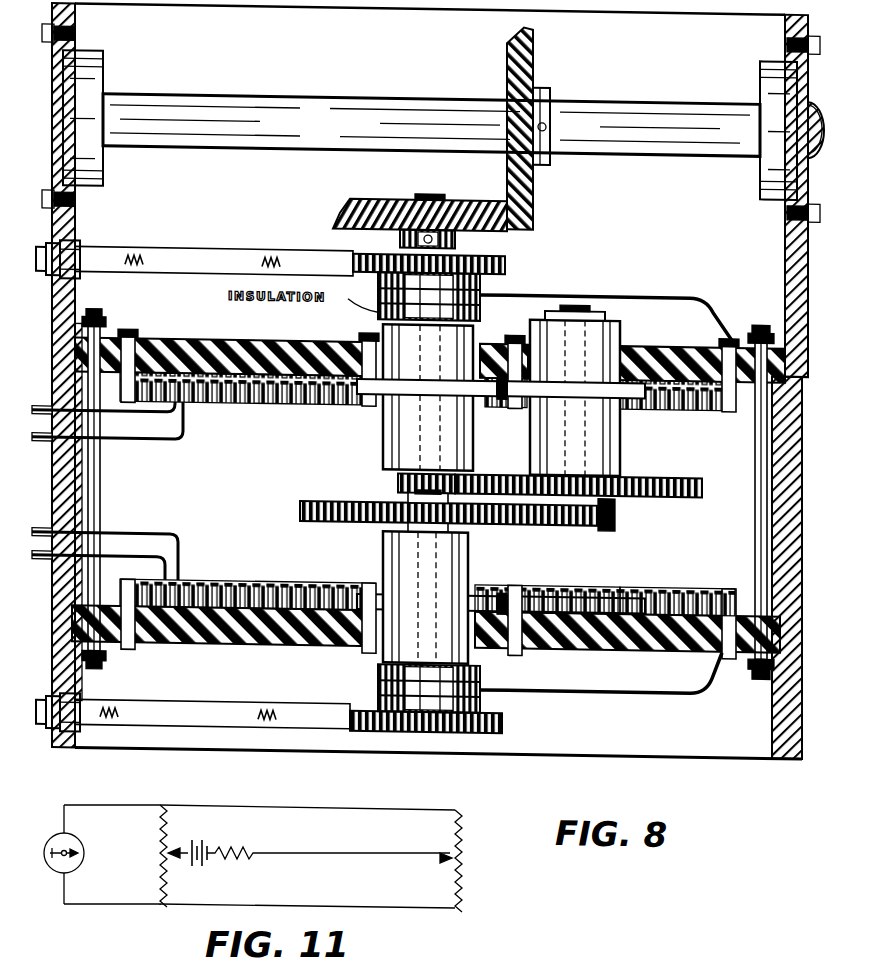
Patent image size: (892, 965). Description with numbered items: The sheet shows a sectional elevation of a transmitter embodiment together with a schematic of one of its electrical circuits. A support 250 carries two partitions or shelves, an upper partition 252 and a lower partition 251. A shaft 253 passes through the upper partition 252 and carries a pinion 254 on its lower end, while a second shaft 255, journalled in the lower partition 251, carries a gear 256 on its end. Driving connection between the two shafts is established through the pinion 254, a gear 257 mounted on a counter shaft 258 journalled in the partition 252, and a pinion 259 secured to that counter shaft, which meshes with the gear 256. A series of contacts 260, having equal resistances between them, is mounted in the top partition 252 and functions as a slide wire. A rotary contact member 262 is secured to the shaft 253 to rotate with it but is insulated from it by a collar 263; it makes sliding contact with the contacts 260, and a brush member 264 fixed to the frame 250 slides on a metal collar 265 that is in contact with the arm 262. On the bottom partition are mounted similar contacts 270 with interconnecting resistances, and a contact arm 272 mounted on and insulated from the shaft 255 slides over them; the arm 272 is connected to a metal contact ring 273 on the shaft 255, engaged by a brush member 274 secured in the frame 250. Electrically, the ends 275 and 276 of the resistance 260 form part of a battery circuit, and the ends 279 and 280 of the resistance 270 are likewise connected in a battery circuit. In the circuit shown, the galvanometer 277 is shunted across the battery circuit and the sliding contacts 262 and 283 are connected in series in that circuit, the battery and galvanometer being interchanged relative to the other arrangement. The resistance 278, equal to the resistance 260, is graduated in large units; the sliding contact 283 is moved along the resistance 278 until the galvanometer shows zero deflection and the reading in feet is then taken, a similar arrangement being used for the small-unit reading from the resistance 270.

In FIG. 8, the support 250 is at (776, 744).
In FIG. 8, the lower partition 251 is at (238, 578).
In FIG. 8, the upper partition 252 is at (262, 342).
In FIG. 8, the shaft 253 is at (415, 394).
In FIG. 8, the pinion 254 is at (398, 477).
In FIG. 8, the shaft 255 is at (395, 550).
In FIG. 8, the gear 256 is at (527, 518).
In FIG. 8, the gear 257 is at (672, 470).
In FIG. 8, the counter shaft 258 is at (592, 411).
In FIG. 8, the pinion 259 is at (616, 503).
In FIG. 8, the contacts 260 is at (128, 338).
In FIG. 8, the rotary contact member 262 is at (664, 284).
In FIG. 11, the rotary contact member 262 is at (446, 856).
In FIG. 8, the collar 263 is at (481, 293).
In FIG. 11, the collar 263 is at (459, 851).
In FIG. 8, the brush member 264 is at (232, 249).
In FIG. 8, the metal collar 265 is at (508, 259).
In FIG. 8, the contacts 270 is at (690, 577).
In FIG. 8, the contact arm 272 is at (650, 694).
In FIG. 8, the metal contact ring 273 is at (503, 715).
In FIG. 8, the brush member 274 is at (222, 702).
In FIG. 8, the end of resistance 275 is at (158, 438).
In FIG. 8, the end of resistance 276 is at (160, 417).
In FIG. 11, the galvanometer 277 is at (80, 848).
In FIG. 11, the resistance 278 is at (163, 834).
In FIG. 8, the end of resistance 279 is at (190, 521).
In FIG. 8, the end of resistance 280 is at (150, 555).
In FIG. 11, the sliding contact 283 is at (175, 852).